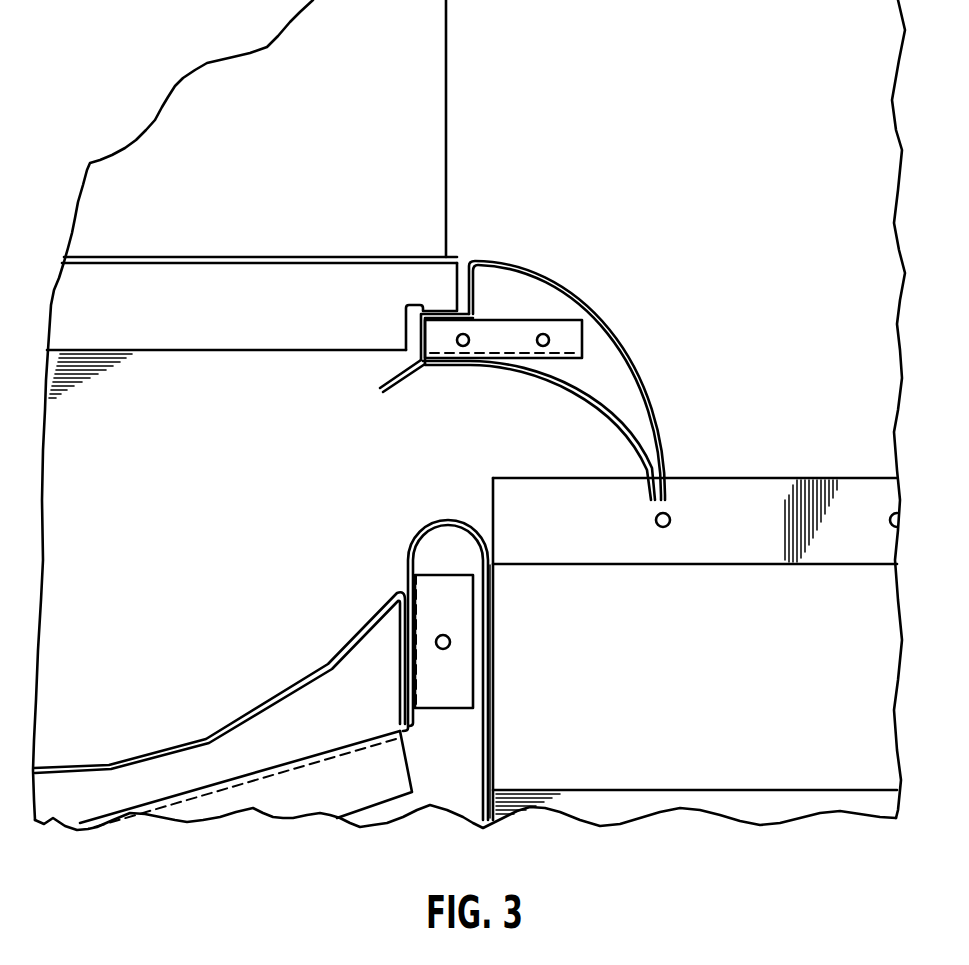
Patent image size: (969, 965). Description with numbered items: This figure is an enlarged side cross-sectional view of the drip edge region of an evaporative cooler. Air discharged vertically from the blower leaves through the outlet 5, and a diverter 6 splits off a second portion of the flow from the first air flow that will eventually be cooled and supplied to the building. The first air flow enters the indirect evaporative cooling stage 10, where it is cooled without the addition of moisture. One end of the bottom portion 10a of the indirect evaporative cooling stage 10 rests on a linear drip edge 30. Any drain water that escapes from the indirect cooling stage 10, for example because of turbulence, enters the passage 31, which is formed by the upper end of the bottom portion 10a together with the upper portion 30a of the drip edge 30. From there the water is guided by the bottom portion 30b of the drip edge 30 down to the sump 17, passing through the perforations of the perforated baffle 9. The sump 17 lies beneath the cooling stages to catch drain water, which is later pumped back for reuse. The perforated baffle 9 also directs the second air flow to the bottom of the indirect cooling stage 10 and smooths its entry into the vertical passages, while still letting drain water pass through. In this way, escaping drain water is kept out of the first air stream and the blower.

The outlet 5 is at (718, 478).
The diverter 6 is at (610, 352).
The perforated baffle 9 is at (360, 630).
The indirect evaporative cooling stage 10 is at (423, 92).
The bottom portion of the indirect evaporative cooling stage 10a is at (190, 330).
The sump 17 is at (240, 757).
The linear drip edge 30 is at (474, 351).
The upper portion of the drip edge 30a is at (467, 258).
The bottom portion of the drip edge 30b is at (386, 363).
The passage 31 is at (462, 250).